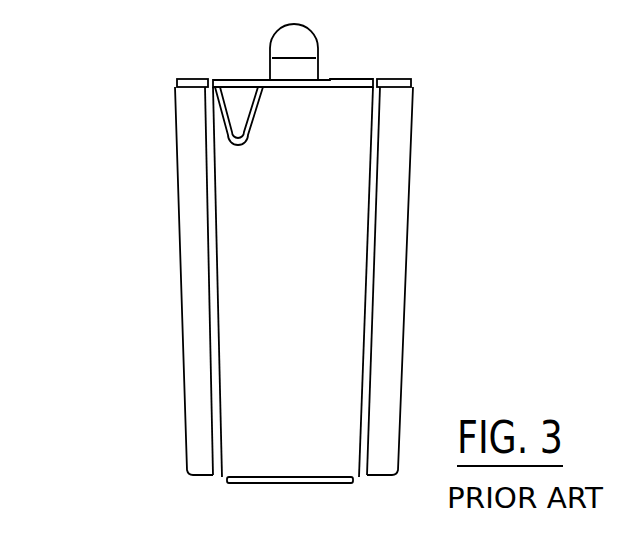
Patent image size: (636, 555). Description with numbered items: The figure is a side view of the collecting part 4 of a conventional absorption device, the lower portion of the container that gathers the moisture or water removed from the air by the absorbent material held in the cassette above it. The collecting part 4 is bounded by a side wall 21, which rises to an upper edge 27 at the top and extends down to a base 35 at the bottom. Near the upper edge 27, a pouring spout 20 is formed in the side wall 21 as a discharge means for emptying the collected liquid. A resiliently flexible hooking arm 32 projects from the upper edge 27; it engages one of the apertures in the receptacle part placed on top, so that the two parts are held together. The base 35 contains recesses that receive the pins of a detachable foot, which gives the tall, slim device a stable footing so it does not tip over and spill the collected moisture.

The collecting part 4 is at (181, 306).
The pouring spout 20 is at (256, 138).
The side wall 21 is at (247, 250).
The upper edge 27 is at (360, 80).
The hooking arm 32 is at (279, 38).
The base 35 is at (212, 477).